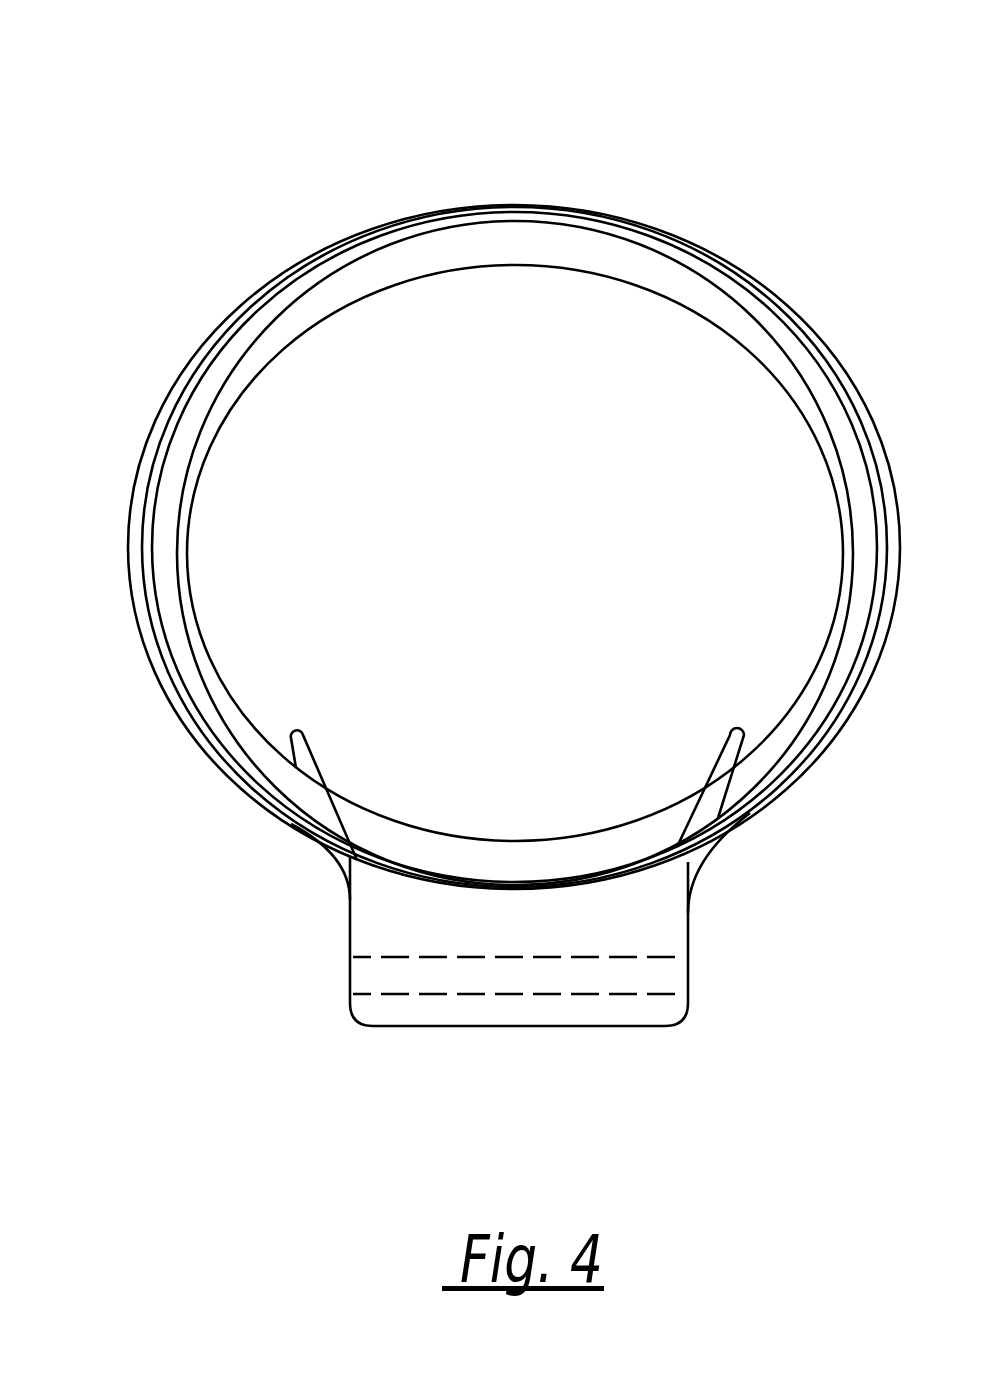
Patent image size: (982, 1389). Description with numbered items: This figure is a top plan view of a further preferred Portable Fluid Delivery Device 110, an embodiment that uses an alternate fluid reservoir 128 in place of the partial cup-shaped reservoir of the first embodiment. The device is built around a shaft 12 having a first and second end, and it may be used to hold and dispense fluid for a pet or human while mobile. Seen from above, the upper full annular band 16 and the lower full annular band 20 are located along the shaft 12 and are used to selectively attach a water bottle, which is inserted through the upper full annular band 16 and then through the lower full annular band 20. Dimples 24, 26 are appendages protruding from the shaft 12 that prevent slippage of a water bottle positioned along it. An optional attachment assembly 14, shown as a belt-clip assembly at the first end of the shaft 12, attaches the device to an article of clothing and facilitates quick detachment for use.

The Portable Fluid Delivery Device 110 is at (553, 130).
The fluid reservoir 128 is at (260, 490).
The upper full annular band 16 is at (183, 677).
The lower full annular band 20 is at (202, 748).
The dimple 26 is at (323, 812).
The dimple 24 is at (712, 795).
The shaft 12 is at (405, 918).
The attachment assembly 14 is at (608, 1007).